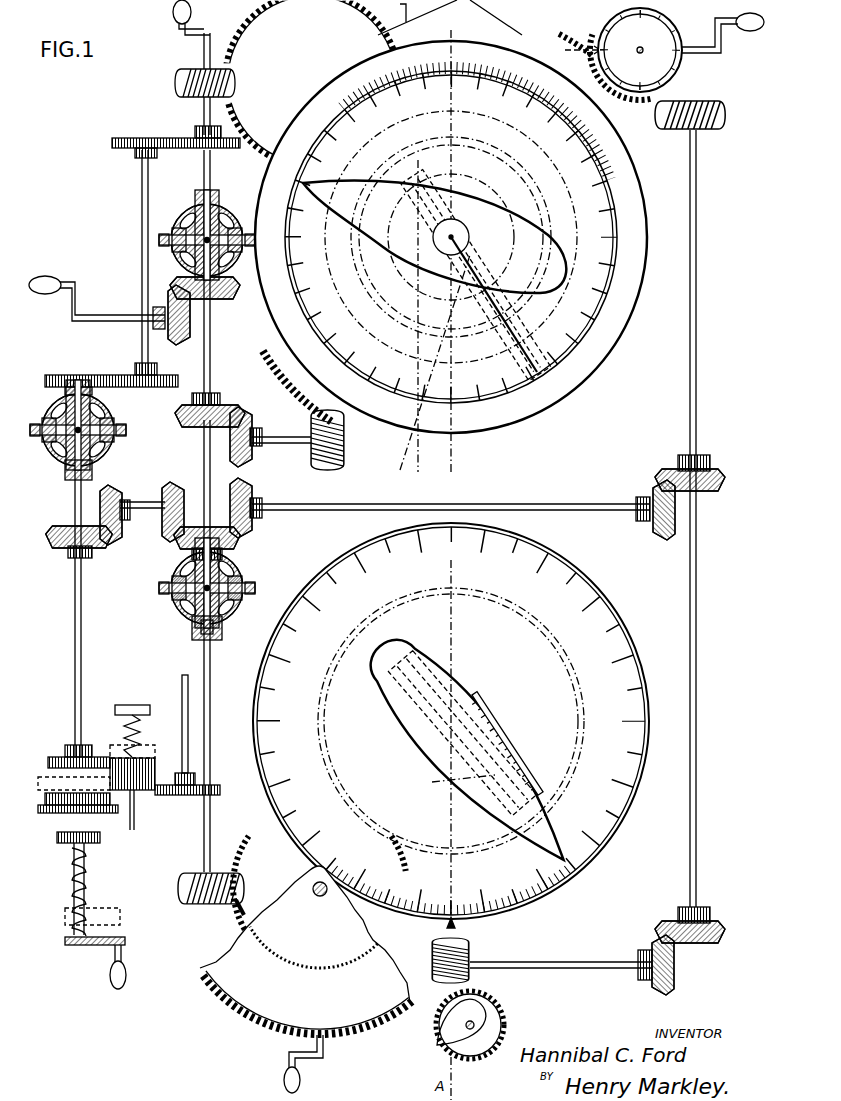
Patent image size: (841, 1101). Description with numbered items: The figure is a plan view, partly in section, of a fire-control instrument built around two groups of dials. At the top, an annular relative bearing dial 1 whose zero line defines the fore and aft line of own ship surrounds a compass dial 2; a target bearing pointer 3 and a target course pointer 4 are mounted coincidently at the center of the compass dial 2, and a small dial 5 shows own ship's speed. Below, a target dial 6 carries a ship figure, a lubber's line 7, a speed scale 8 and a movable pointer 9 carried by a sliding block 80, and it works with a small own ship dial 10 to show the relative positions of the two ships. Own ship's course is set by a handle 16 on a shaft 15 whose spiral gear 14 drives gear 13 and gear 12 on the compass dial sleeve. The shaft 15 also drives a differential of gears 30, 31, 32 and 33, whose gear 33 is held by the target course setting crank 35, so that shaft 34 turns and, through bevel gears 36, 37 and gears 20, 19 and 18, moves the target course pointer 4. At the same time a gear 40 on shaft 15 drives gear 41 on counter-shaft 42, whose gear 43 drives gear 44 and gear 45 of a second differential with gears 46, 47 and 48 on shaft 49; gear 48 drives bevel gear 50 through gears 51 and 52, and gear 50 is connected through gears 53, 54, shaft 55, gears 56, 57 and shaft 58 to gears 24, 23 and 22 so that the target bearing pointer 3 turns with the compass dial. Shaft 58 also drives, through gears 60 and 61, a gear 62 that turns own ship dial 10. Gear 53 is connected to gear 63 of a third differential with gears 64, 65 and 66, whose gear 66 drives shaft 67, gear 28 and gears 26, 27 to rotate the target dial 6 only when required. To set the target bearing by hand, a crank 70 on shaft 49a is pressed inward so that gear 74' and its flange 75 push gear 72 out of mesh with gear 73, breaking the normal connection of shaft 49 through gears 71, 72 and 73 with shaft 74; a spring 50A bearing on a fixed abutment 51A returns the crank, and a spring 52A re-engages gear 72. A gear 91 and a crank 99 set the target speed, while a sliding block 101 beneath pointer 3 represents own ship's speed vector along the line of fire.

The relative bearing dial 1 is at (505, 32).
The compass dial 2 is at (640, 226).
The target bearing pointer 3 is at (532, 385).
The target course pointer 4 is at (410, 262).
The own ship speed dial 5 is at (660, 25).
The target dial 6 is at (585, 585).
The lubber's line 7 is at (440, 932).
The speed scale 8 is at (489, 706).
The movable pointer 9 is at (530, 740).
The own ship dial 10 is at (478, 1008).
The gear 12 is at (392, 13).
The gear 13 is at (260, 38).
The spiral gear 14 is at (174, 75).
The shaft 15 is at (203, 113).
The handle 16 is at (172, 14).
The gear 18 is at (435, 316).
The gear 19 is at (268, 385).
The gear 20 is at (330, 470).
The gear 22 is at (635, 190).
The gear 23 is at (658, 98).
The gear 24 is at (725, 115).
The gear 26 is at (262, 795).
The gear 27 is at (245, 905).
The gear 28 is at (180, 906).
The differential gear 30 is at (198, 205).
The differential gear 31 is at (178, 232).
The differential gear 32 is at (236, 228).
The differential gear 33 is at (192, 292).
The shaft 34 is at (212, 372).
The target course setting crank 35 is at (100, 323).
The bevel gear 36 is at (190, 428).
The bevel gear 37 is at (252, 458).
The gear 40 is at (222, 147).
The gear 41 is at (115, 149).
The counter-shaft 42 is at (140, 245).
The gear 43 is at (160, 375).
The gear 44 is at (48, 372).
The differential gear 45 is at (95, 398).
The differential gear 46 is at (52, 412).
The differential gear 47 is at (115, 445).
The differential gear 48 is at (55, 458).
The shaft 49 is at (74, 622).
The shaft 49a is at (88, 862).
The bevel gear 50 is at (165, 535).
The spring 50A is at (85, 890).
The gear 51 is at (60, 548).
The fixed abutment 51A is at (58, 844).
The gear 52 is at (108, 548).
The spring 52A is at (128, 732).
The gear 53 is at (240, 540).
The gear 54 is at (255, 520).
The shaft 55 is at (610, 503).
The gear 56 is at (668, 540).
The gear 57 is at (728, 482).
The shaft 58 is at (700, 350).
The gear 60 is at (718, 915).
The gear 61 is at (656, 945).
The gear 62 is at (470, 948).
The differential gear 63 is at (228, 572).
The differential gear 64 is at (172, 598).
The differential gear 65 is at (238, 612).
The differential gear 66 is at (200, 635).
The shaft 67 is at (212, 670).
The crank 70 is at (109, 975).
The gear 71 is at (52, 755).
The gear 72 is at (158, 760).
The gear 73 is at (170, 797).
The shaft 74 is at (149, 724).
The gear 74' is at (61, 792).
The flange 75 is at (45, 812).
The sliding block 80 is at (488, 805).
The gear 91 is at (215, 992).
The crank 99 is at (301, 1078).
The sliding block 101 is at (550, 390).